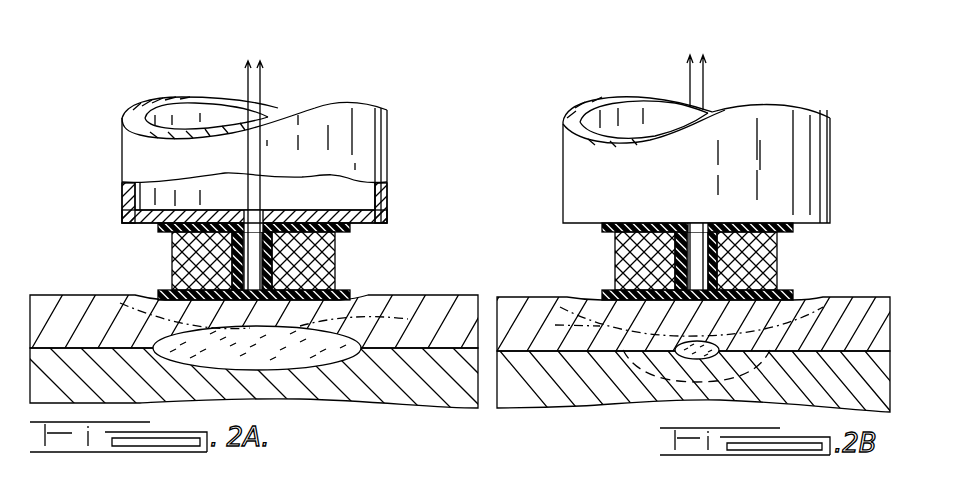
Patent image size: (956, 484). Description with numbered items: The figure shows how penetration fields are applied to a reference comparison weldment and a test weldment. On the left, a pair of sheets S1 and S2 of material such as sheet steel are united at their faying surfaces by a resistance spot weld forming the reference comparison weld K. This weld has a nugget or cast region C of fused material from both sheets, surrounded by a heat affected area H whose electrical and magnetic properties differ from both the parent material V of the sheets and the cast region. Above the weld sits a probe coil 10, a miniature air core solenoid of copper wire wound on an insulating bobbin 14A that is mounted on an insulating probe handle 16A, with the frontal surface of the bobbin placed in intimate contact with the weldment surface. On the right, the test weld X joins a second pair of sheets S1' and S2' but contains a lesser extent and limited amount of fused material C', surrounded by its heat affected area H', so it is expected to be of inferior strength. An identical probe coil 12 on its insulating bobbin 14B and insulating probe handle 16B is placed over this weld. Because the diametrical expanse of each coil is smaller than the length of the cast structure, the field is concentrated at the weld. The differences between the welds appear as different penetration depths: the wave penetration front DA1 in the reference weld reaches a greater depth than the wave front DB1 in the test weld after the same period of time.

In FIG. 2A, the insulating probe handle 16A is at (377, 120).
In FIG. 2A, the insulating bobbin 14A is at (350, 232).
In FIG. 2A, the probe coil 10 is at (338, 260).
In FIG. 2A, the reference comparison weld K is at (81, 286).
In FIG. 2A, the parent material V is at (73, 331).
In FIG. 2B, the parent material V is at (868, 392).
In FIG. 2A, the sheet S1 is at (246, 297).
In FIG. 2A, the sheet S2 is at (267, 407).
In FIG. 2A, the cast region C is at (257, 381).
In FIG. 2A, the heat affected area H is at (375, 404).
In FIG. 2A, the wave penetration front DA1 is at (288, 319).
In FIG. 2B, the insulating probe handle 16B is at (573, 157).
In FIG. 2B, the insulating bobbin 14B is at (797, 233).
In FIG. 2B, the probe coil 12 is at (777, 262).
In FIG. 2B, the test weld X is at (552, 285).
In FIG. 2B, the sheet S1' is at (683, 306).
In FIG. 2B, the sheet S2' is at (707, 403).
In FIG. 2B, the fused material C' is at (660, 391).
In FIG. 2B, the heat affected area H' is at (696, 403).
In FIG. 2B, the wave penetration front DB1 is at (665, 322).